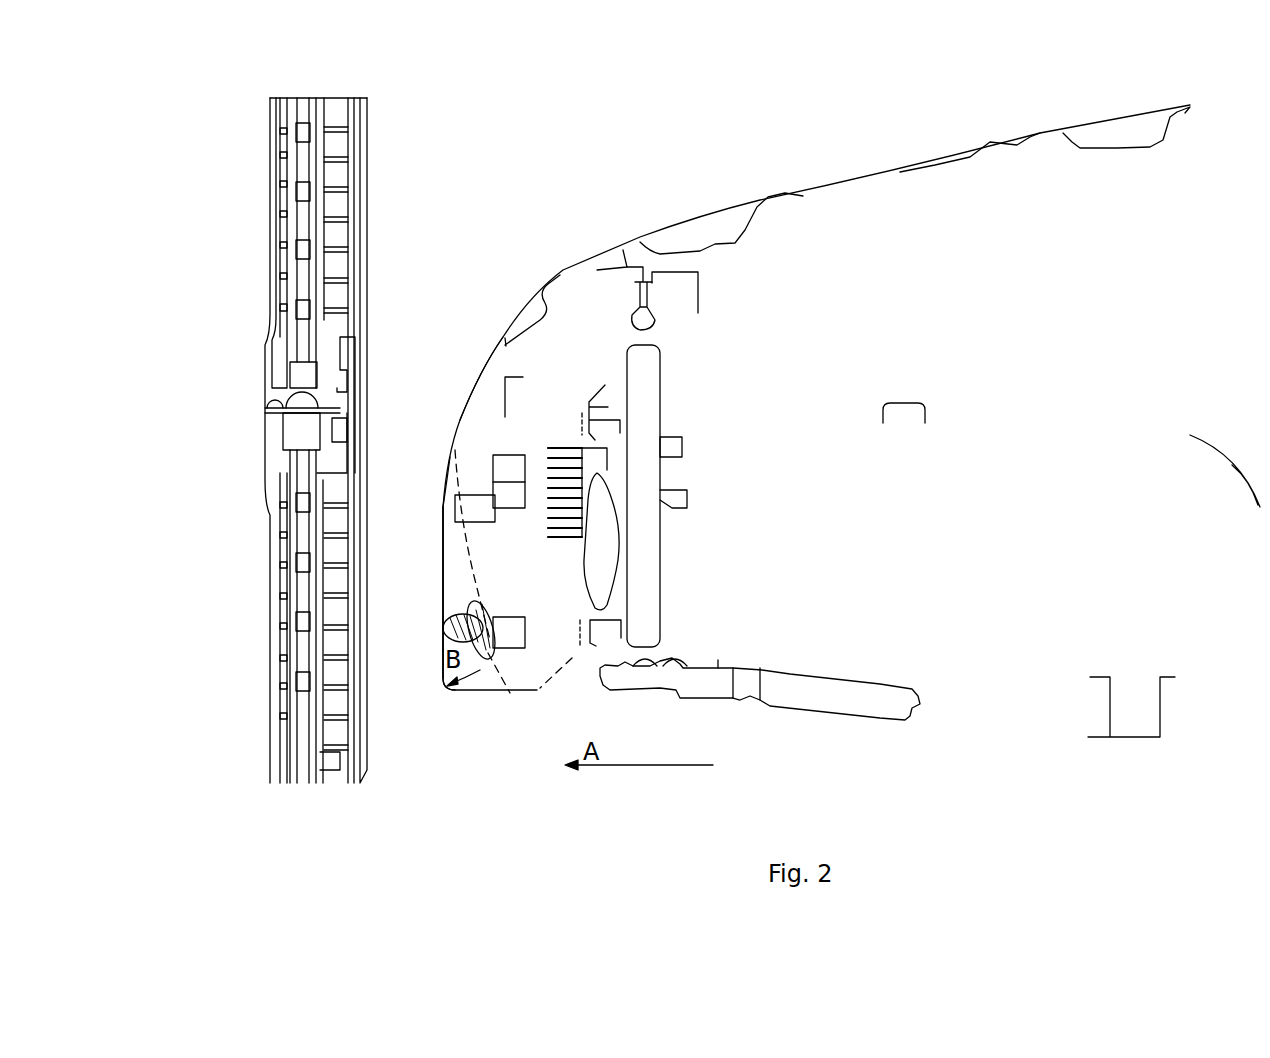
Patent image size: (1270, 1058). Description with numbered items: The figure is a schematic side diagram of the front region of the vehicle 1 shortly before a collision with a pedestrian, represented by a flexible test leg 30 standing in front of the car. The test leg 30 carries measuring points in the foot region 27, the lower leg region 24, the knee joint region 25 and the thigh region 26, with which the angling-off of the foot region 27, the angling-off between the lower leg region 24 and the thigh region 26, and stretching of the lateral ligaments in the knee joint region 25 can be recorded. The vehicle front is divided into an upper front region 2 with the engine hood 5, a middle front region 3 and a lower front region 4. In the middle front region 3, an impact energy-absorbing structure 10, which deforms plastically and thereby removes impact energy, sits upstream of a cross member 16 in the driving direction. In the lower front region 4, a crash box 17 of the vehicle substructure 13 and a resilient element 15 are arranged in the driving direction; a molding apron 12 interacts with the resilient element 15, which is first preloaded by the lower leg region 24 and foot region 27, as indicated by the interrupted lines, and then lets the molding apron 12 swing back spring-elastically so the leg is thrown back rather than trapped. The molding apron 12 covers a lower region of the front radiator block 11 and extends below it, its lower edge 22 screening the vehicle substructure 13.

The vehicle 1 is at (738, 150).
The upper front region 2 is at (562, 270).
The middle front region 3 is at (497, 335).
The lower front region 4 is at (441, 492).
The engine hood 5 is at (876, 168).
The impact energy-absorbing structure 10 is at (468, 490).
The front radiator block 11 is at (669, 379).
The molding apron 12 is at (442, 627).
The vehicle substructure 13 is at (762, 680).
The resilient element 15 is at (463, 613).
The cross member 16 is at (510, 457).
The crash box 17 is at (502, 617).
The lower edge 22 is at (447, 693).
The lower leg region 24 is at (278, 577).
The knee joint region 25 is at (268, 398).
The thigh region 26 is at (295, 232).
The foot region 27 is at (282, 706).
The test leg 30 is at (255, 440).